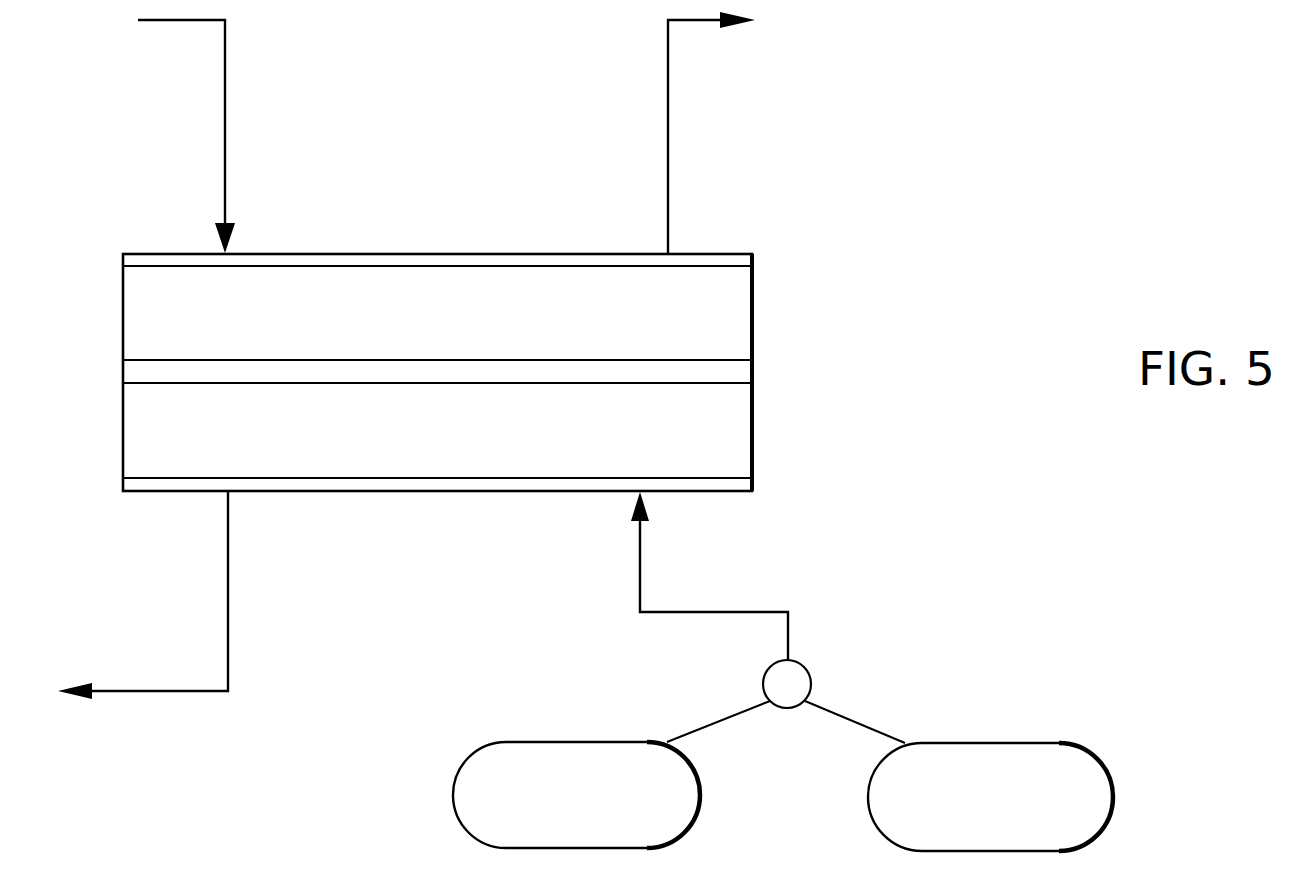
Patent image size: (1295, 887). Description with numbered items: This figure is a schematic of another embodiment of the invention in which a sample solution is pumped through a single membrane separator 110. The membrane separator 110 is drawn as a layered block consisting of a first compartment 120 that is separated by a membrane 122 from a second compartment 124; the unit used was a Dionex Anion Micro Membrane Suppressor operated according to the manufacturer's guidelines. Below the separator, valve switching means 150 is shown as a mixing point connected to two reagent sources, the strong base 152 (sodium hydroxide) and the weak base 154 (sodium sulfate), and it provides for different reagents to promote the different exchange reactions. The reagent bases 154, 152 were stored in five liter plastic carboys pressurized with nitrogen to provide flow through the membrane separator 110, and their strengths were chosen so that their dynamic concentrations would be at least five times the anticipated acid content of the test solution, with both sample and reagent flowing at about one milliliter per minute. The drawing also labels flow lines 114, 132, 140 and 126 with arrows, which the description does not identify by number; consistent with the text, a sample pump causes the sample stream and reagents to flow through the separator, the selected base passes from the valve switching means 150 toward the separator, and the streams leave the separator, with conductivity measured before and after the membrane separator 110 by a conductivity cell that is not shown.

The membrane separator 110 is at (800, 240).
The feed inlet stream 114 is at (225, 135).
The first compartment 120 is at (752, 305).
The membrane 122 is at (752, 372).
The second compartment 124 is at (752, 445).
The base inlet stream 126 is at (640, 570).
The outlet stream 132 is at (668, 147).
The product outlet stream 140 is at (228, 598).
The valve switching means 150 is at (811, 668).
The strong base 152 is at (700, 775).
The weak base 154 is at (1113, 770).